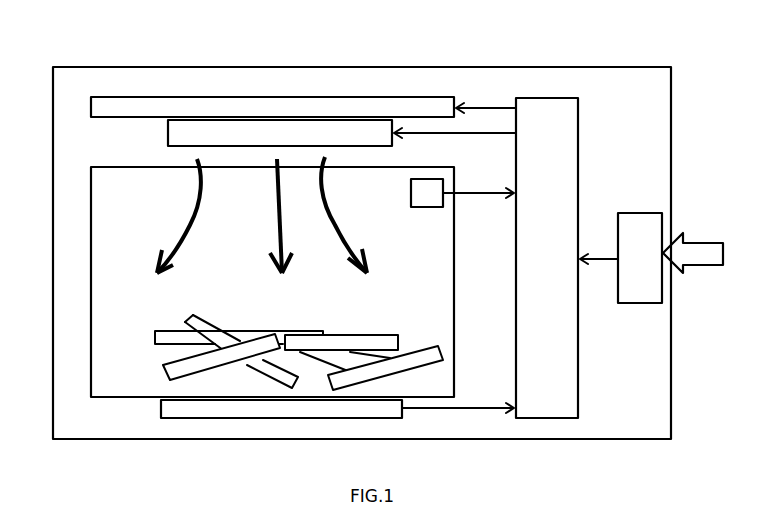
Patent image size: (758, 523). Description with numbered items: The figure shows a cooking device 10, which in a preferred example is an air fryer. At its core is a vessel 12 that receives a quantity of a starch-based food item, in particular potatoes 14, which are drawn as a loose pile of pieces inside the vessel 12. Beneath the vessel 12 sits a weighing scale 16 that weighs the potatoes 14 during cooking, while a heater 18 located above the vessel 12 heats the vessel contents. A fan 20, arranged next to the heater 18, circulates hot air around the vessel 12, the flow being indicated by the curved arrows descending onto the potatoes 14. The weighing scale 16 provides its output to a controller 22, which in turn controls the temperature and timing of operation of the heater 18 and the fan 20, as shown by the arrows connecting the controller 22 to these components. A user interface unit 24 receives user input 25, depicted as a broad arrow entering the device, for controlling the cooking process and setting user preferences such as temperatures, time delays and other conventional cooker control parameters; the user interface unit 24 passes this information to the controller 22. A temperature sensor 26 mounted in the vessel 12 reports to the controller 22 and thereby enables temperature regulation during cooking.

The cooking device 10 is at (488, 66).
The vessel 12 is at (91, 213).
The potatoes 14 is at (176, 333).
The weighing scale 16 is at (161, 409).
The heater 18 is at (91, 103).
The fan 20 is at (168, 127).
The controller 22 is at (578, 138).
The user interface unit 24 is at (632, 213).
The user input 25 is at (703, 243).
The temperature sensor 26 is at (427, 207).